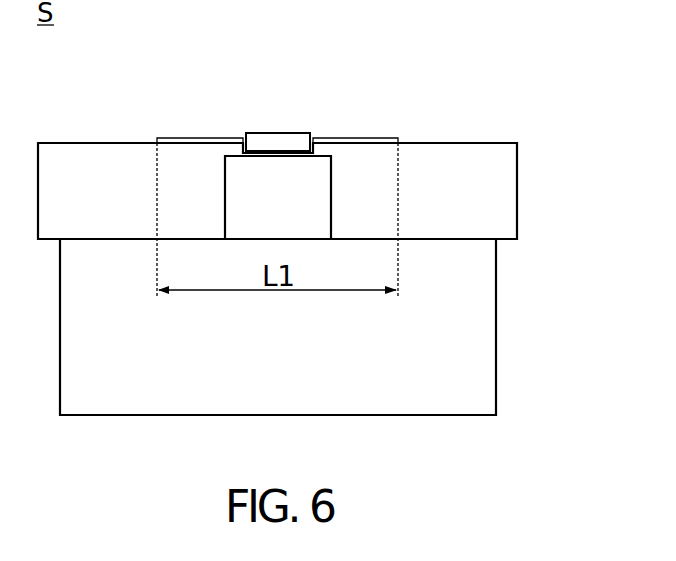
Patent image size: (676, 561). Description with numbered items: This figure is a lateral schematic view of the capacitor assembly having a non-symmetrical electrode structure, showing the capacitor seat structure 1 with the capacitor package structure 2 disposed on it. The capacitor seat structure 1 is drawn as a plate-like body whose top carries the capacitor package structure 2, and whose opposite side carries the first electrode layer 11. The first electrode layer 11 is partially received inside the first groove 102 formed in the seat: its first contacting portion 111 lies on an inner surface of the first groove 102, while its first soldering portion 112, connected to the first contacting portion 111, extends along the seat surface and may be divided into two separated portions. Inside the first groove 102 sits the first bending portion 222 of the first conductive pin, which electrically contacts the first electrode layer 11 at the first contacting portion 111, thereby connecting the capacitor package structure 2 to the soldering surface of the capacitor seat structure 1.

The capacitor seat structure 1 is at (517, 177).
The first electrode layer 11 is at (395, 138).
The first contacting portion 111 is at (272, 157).
The first groove 102 is at (291, 154).
The first soldering portion 112 is at (192, 141).
The first bending portion 222 is at (257, 141).
The capacitor package structure 2 is at (498, 317).